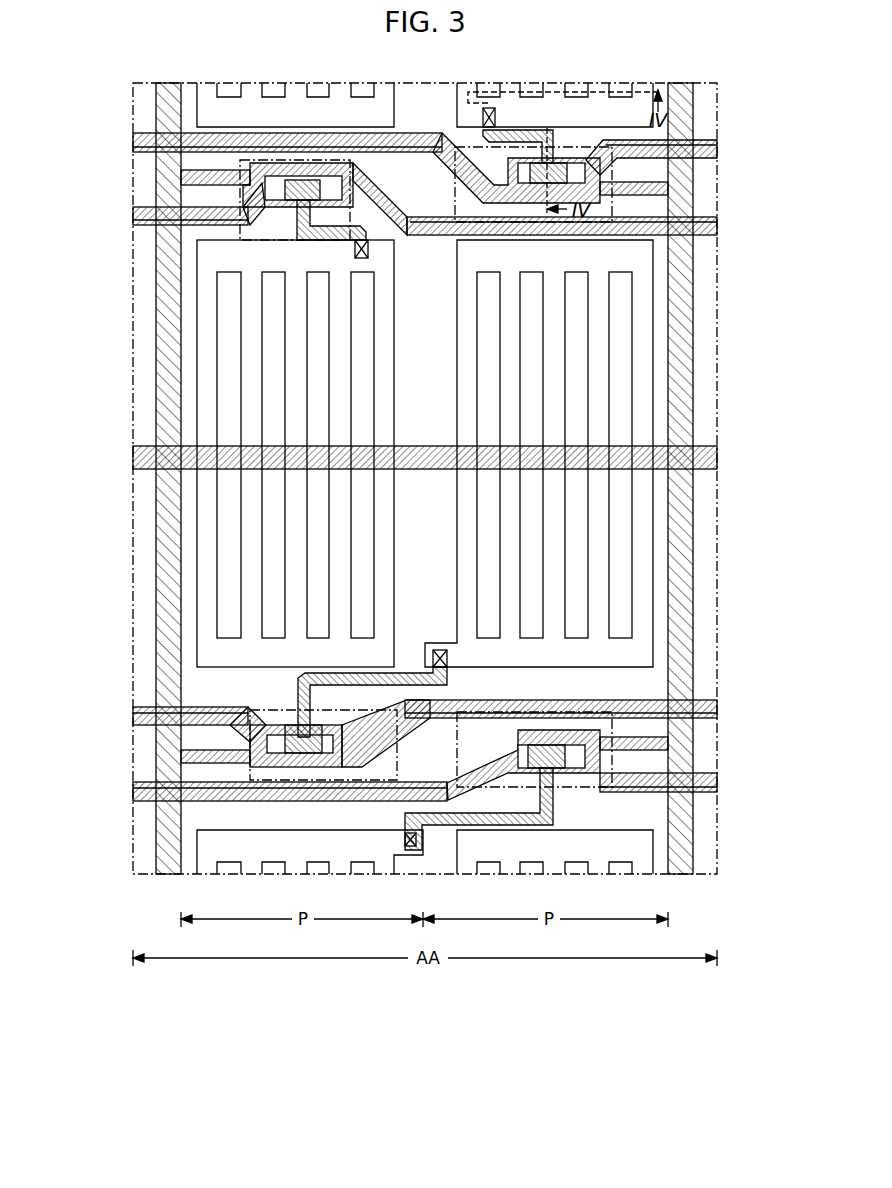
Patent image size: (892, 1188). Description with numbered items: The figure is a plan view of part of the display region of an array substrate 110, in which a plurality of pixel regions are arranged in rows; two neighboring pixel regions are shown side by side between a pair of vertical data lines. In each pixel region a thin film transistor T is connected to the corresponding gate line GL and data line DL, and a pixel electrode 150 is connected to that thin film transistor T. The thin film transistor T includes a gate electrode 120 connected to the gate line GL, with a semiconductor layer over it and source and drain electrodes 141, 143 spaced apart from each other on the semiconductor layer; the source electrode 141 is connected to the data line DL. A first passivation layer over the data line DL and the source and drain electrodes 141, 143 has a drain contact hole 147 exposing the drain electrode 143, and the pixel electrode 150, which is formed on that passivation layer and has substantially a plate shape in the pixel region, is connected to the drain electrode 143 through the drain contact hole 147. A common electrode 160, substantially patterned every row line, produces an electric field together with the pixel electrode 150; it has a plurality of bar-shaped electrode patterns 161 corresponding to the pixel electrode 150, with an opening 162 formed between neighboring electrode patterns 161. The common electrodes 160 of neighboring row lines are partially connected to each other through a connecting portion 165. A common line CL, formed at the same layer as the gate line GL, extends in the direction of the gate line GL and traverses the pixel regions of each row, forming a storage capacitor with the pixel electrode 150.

The array substrate 110 is at (444, 1021).
The gate electrode 120 is at (272, 210).
The source electrode 141 is at (295, 198).
The drain electrode 143 is at (318, 228).
The drain contact hole 147 is at (370, 250).
The pixel electrode 150 is at (197, 312).
The common electrode 160 is at (718, 148).
The electrode pattern 161 is at (600, 358).
The opening 162 is at (628, 312).
The connecting portion 165 is at (417, 170).
The gate line GL is at (133, 147).
The data line DL is at (156, 350).
The common line CL is at (133, 458).
The thin film transistor T is at (372, 479).